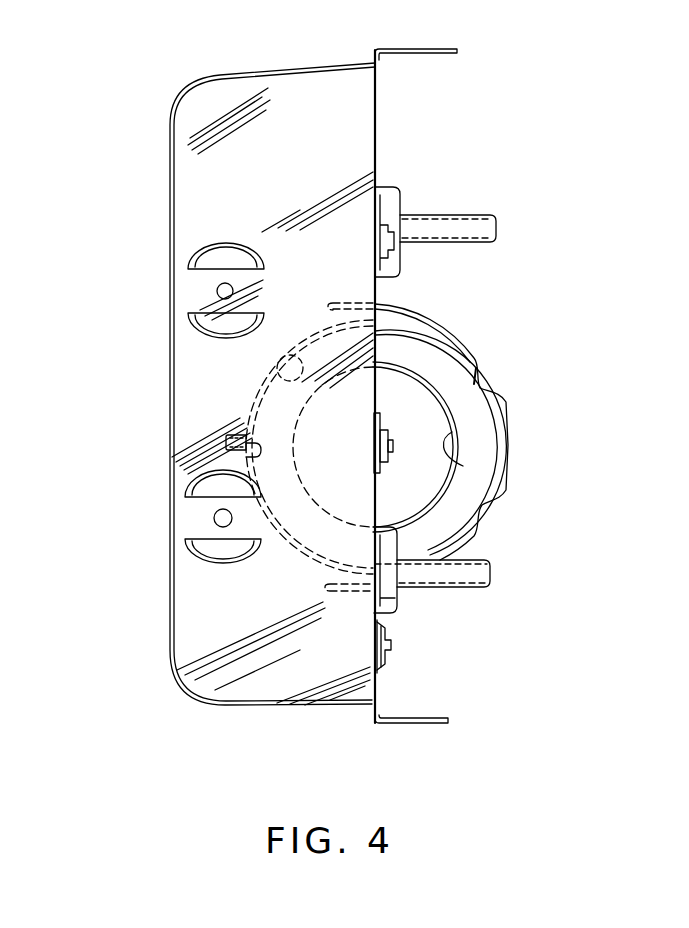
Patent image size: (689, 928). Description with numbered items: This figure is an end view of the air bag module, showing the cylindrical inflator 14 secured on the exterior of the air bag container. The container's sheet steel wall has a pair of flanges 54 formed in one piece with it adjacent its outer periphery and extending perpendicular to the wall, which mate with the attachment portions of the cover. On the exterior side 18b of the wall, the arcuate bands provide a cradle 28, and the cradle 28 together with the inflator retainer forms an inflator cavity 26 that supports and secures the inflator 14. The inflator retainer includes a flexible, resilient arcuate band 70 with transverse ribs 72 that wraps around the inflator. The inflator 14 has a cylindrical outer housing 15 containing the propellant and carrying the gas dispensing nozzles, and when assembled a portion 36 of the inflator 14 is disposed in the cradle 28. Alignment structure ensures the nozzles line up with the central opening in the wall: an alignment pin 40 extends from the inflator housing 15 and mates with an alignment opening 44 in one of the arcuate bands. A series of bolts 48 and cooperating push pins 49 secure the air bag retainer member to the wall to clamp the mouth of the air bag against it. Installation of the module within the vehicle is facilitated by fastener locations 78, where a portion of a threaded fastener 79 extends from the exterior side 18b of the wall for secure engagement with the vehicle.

The flanges 54 is at (228, 95).
The exterior side of the wall 18b is at (380, 122).
The alignment opening 44 is at (262, 468).
The alignment pin 40 is at (213, 434).
The cradle 28 is at (268, 380).
The portion of the inflator 36 is at (293, 545).
The arcuate band 70 is at (435, 317).
The transverse ribs 72 is at (478, 381).
The inflator cavity 26 is at (494, 455).
The inflator 14 is at (458, 489).
The outer housing 15 is at (452, 432).
The threaded fastener 79 is at (473, 588).
The fastener locations 78 is at (426, 601).
The bolts 48 is at (384, 630).
The push pins 49 is at (384, 667).